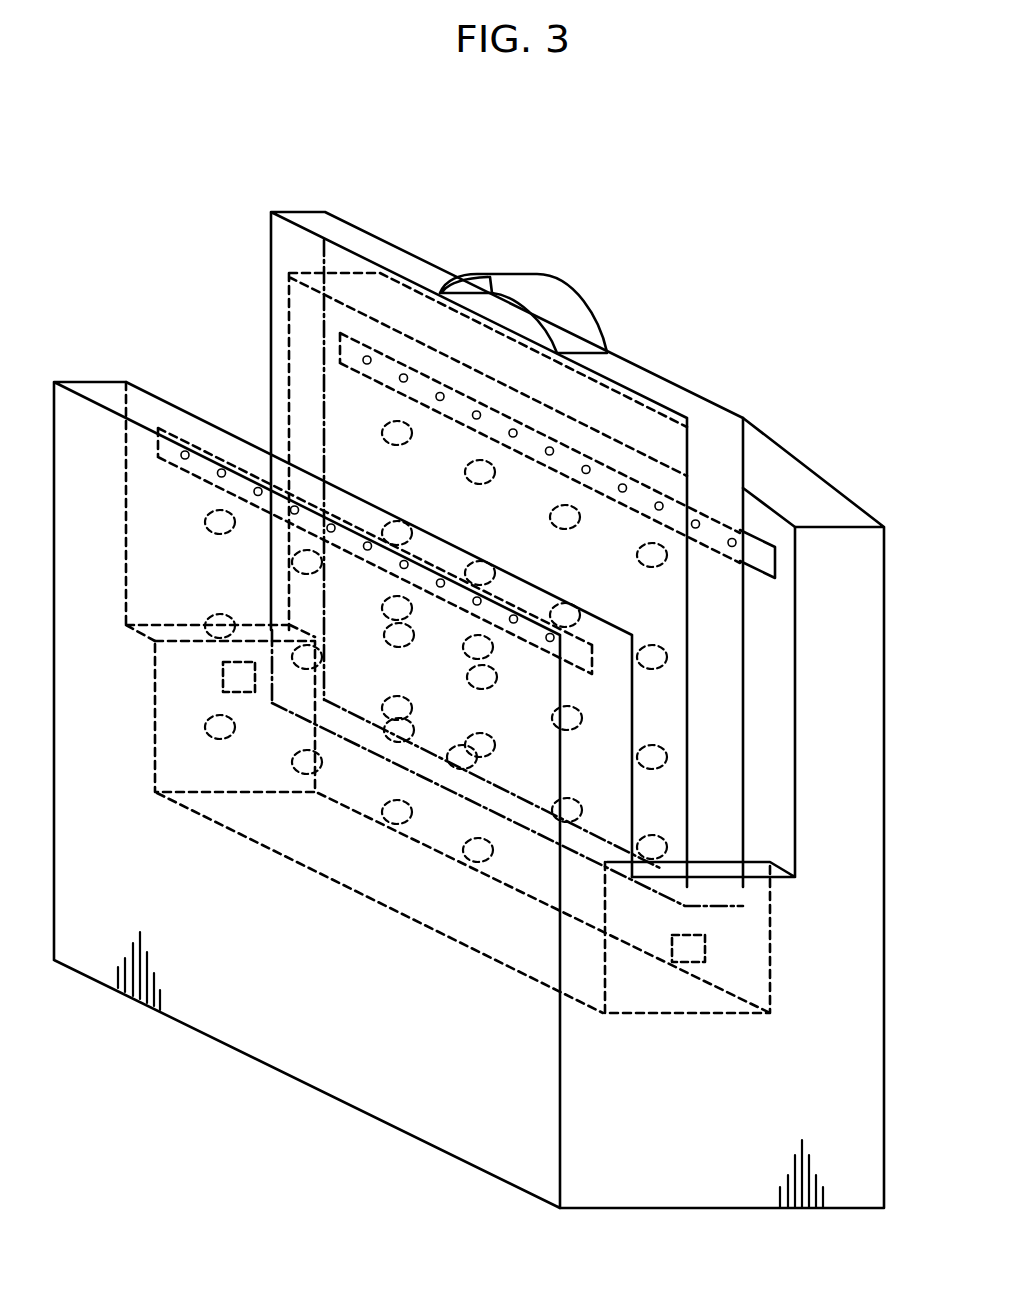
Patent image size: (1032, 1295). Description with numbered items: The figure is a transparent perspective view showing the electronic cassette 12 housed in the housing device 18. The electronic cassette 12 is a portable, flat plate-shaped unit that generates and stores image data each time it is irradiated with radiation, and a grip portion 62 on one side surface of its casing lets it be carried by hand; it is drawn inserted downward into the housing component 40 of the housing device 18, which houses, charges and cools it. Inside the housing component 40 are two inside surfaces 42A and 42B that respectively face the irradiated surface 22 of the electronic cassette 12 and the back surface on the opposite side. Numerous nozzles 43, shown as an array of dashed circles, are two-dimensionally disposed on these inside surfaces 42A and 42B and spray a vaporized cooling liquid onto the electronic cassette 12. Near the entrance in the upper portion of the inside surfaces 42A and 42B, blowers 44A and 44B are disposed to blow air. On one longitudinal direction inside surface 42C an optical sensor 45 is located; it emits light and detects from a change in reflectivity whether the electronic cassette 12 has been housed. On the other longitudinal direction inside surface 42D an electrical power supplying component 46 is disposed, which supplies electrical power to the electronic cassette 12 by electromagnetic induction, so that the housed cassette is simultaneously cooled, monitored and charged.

The electronic cassette 12 is at (673, 383).
The housing device 18 is at (825, 497).
The irradiated surface 22 is at (307, 323).
The housing component 40 is at (212, 394).
The inside surface 42A is at (140, 403).
The inside surface 42B is at (778, 672).
The longitudinal direction inside surface 42C is at (650, 1000).
The longitudinal direction inside surface 42D is at (168, 706).
The nozzles 43 is at (466, 480).
The blower 44A is at (593, 665).
The blower 44B is at (778, 572).
The optical sensor 45 is at (706, 947).
The electrical power supplying component 46 is at (223, 680).
The grip portion 62 is at (577, 303).